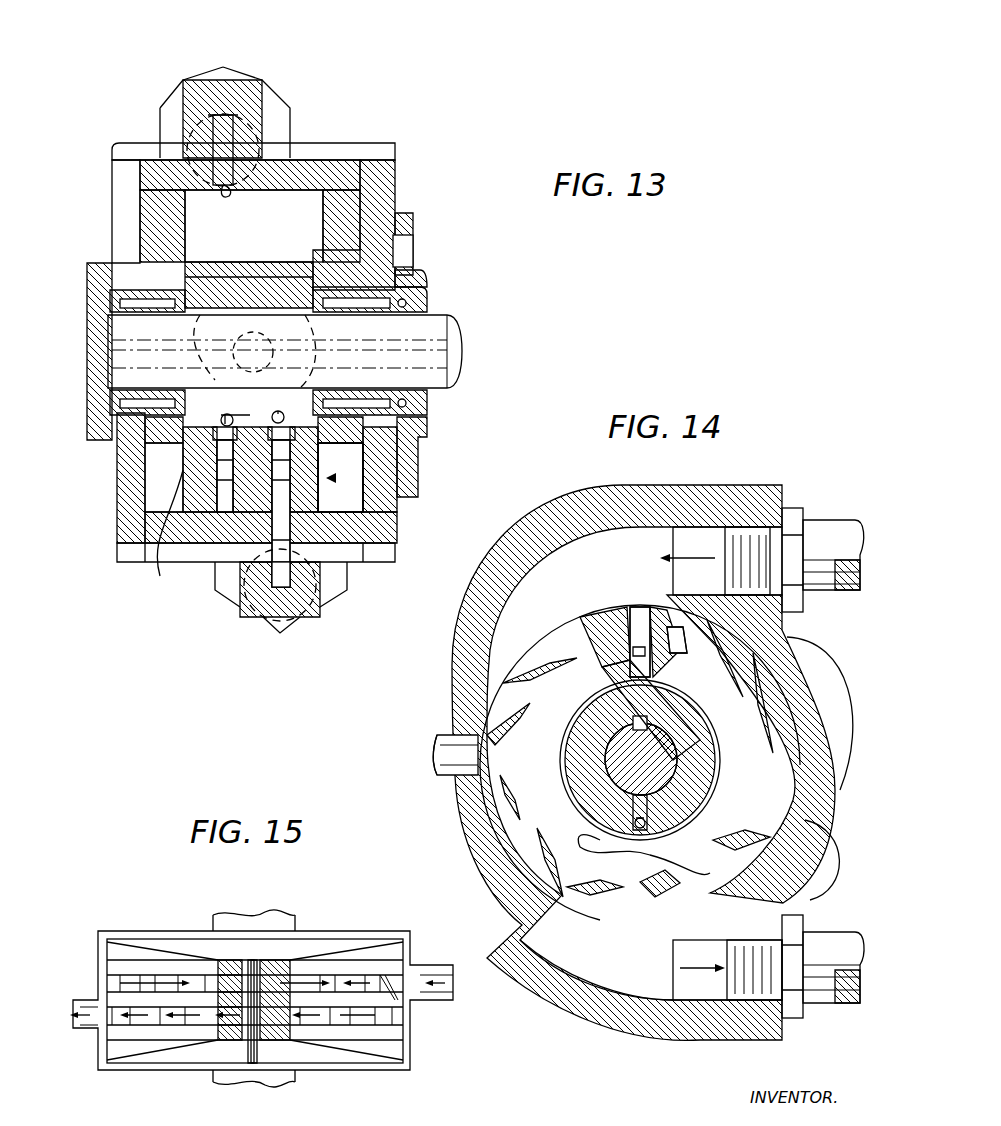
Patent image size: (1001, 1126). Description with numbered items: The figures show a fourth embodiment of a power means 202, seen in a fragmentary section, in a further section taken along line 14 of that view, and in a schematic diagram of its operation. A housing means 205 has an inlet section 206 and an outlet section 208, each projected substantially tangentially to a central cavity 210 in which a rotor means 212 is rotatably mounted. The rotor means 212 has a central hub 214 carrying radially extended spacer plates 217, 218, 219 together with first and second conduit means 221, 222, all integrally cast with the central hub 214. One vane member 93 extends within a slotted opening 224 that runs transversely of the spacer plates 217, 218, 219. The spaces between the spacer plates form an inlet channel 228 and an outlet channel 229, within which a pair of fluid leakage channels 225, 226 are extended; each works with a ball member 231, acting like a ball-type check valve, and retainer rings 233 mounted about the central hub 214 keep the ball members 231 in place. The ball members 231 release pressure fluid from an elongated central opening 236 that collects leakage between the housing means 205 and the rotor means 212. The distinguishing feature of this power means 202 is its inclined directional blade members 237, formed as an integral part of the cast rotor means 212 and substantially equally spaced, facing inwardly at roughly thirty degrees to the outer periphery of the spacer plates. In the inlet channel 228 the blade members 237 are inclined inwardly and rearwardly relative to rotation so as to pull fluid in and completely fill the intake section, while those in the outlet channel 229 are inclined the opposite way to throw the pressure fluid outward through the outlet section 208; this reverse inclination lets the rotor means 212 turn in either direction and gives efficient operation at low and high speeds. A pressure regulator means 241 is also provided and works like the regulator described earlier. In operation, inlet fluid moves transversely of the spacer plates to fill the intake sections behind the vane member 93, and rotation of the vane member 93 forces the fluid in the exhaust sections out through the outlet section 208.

In FIG. 13, the section line 14— 14 is at (223, 200).
In FIG. 13, the vane member 93 is at (305, 246).
In FIG. 14, the vane member 93 is at (640, 610).
In FIG. 15, the vane member 93 is at (270, 958).
In FIG. 13, the power means 202 is at (410, 146).
In FIG. 15, the power means 202 is at (133, 912).
In FIG. 13, the housing means 205 is at (410, 237).
In FIG. 13, the inlet section 206 is at (270, 120).
In FIG. 14, the inlet section 206 is at (792, 523).
In FIG. 15, the inlet section 206 is at (430, 993).
In FIG. 13, the outlet section 208 is at (330, 583).
In FIG. 14, the outlet section 208 is at (685, 1040).
In FIG. 15, the outlet section 208 is at (93, 1030).
In FIG. 13, the central cavity 210 is at (262, 190).
In FIG. 13, the rotor means 212 is at (336, 476).
In FIG. 14, the rotor means 212 is at (717, 770).
In FIG. 13, the central hub 214 is at (320, 283).
In FIG. 14, the central hub 214 is at (680, 686).
In FIG. 13, the spacer plate 217 is at (186, 528).
In FIG. 15, the spacer plate 217 is at (370, 966).
In FIG. 13, the spacer plate 218 is at (275, 560).
In FIG. 15, the spacer plate 218 is at (380, 1000).
In FIG. 13, the spacer plate 219 is at (312, 483).
In FIG. 15, the spacer plate 219 is at (350, 1028).
In FIG. 14, the first conduit means 221 is at (615, 603).
In FIG. 15, the first conduit means 221 is at (215, 960).
In FIG. 15, the second conduit means 222 is at (290, 1040).
In FIG. 14, the slotted opening 224 is at (640, 648).
In FIG. 13, the fluid leakage channel 225 is at (215, 420).
In FIG. 13, the fluid leakage channel 226 is at (427, 421).
In FIG. 13, the inlet channel 228 is at (215, 465).
In FIG. 14, the inlet channel 228 is at (555, 563).
In FIG. 13, the outlet channel 229 is at (418, 463).
In FIG. 14, the outlet channel 229 is at (622, 985).
In FIG. 13, the ball member 231 is at (340, 397).
In FIG. 14, the ball member 231 is at (625, 828).
In FIG. 13, the retainer ring 233 is at (405, 439).
In FIG. 14, the retainer ring 233 is at (680, 813).
In FIG. 13, the elongated central opening 236 is at (462, 372).
In FIG. 14, the blade member 237 is at (720, 704).
In FIG. 15, the blade member 237 is at (385, 978).
In FIG. 13, the pressure regulator means 241 is at (130, 288).
In FIG. 14, the pressure regulator means 241 is at (455, 750).